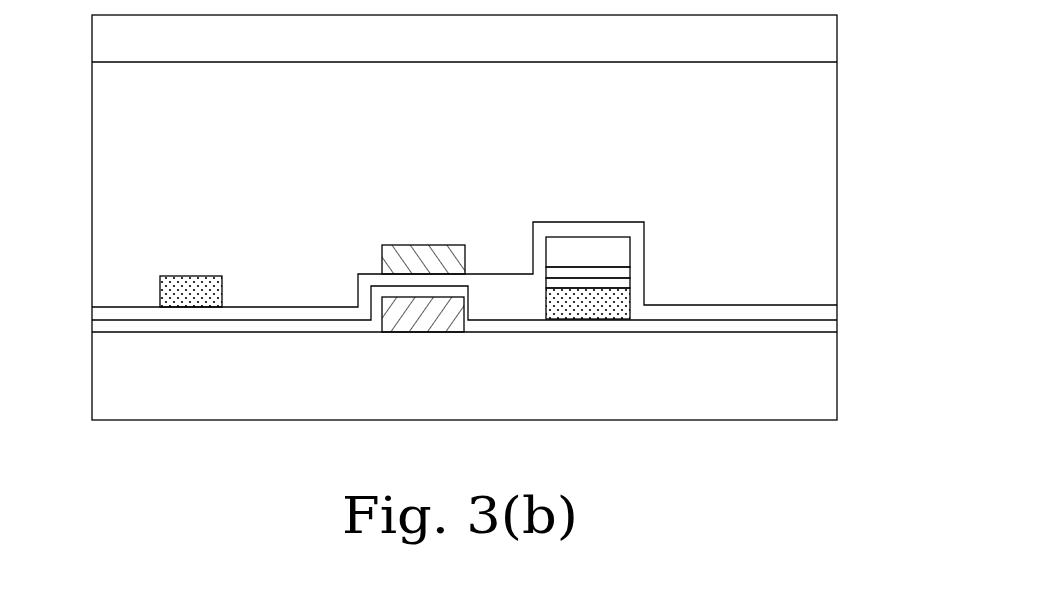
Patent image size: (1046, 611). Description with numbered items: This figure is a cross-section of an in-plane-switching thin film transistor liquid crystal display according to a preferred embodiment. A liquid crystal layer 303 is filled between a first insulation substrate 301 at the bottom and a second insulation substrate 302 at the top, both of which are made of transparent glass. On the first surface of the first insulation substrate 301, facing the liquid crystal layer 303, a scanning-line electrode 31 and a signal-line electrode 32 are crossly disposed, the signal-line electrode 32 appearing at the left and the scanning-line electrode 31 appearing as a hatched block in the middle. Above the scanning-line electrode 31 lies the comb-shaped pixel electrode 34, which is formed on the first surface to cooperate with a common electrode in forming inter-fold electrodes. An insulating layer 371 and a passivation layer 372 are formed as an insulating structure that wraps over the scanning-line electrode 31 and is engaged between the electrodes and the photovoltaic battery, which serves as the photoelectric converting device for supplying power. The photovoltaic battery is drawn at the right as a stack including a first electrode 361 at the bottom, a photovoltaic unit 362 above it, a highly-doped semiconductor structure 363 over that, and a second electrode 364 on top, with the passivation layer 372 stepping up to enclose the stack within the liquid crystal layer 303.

The first insulation substrate 301 is at (818, 388).
The second insulation substrate 302 is at (818, 40).
The liquid crystal layer 303 is at (818, 200).
The scanning-line electrode 31 is at (435, 312).
The signal-line electrode 32 is at (180, 290).
The comb-shaped pixel electrode 34 is at (415, 250).
The first electrode 361 is at (620, 306).
The photovoltaic unit 362 is at (620, 280).
The highly-doped semiconductor structure 363 is at (620, 273).
The second electrode 364 is at (620, 243).
The insulating layer 371 is at (153, 327).
The passivation layer 372 is at (152, 313).